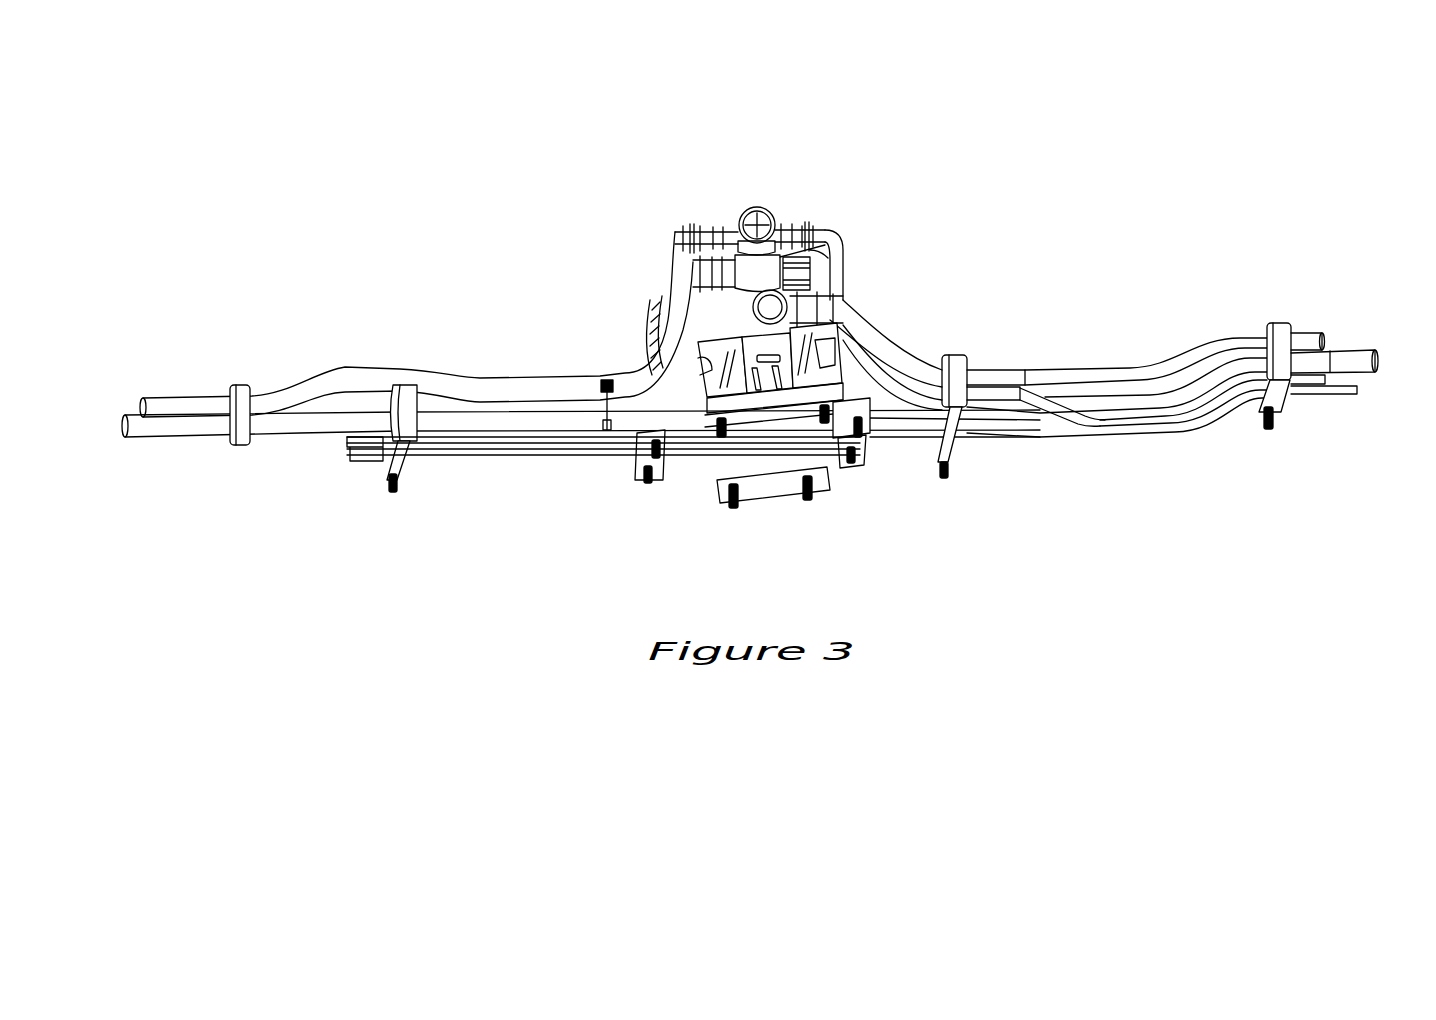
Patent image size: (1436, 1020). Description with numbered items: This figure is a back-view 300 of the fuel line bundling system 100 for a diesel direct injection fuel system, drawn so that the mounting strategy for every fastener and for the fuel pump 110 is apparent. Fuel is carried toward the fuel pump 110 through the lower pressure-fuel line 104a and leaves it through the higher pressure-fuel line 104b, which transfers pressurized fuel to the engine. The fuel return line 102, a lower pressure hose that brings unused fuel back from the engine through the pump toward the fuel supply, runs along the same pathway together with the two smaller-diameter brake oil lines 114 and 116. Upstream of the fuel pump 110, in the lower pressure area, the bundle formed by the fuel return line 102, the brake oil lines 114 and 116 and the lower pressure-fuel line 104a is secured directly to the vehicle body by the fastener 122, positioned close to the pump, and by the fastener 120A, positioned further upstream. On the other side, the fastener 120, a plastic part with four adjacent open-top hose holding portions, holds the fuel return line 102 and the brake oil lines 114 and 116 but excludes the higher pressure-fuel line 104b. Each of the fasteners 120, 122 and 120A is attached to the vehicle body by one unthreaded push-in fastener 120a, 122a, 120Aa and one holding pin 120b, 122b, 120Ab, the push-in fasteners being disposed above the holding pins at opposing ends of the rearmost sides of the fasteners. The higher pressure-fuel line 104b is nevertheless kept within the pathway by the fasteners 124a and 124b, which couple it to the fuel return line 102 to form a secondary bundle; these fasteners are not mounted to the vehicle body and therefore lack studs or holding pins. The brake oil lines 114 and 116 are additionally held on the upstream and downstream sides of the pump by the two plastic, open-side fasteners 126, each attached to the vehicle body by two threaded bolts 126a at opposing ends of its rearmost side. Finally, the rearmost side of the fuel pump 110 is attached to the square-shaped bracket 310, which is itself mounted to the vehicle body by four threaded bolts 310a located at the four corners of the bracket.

The back-view 300 is at (246, 163).
The fuel line bundling system 100 is at (384, 262).
The fuel return line 102 is at (1352, 352).
The lower pressure-fuel line 104a is at (1310, 333).
The higher pressure-fuel line 104b is at (155, 405).
The fuel pump 110 is at (733, 208).
The brake oil line 114 is at (1298, 385).
The brake oil line 116 is at (1338, 395).
The fastener 120 is at (412, 385).
The push-in fastener 120a is at (410, 459).
The holding pin 120b is at (395, 487).
The fastener 120A is at (1286, 323).
The push-in fastener 120Aa is at (1262, 408).
The holding pin 120Ab is at (1278, 425).
The fastener 122 is at (948, 352).
The push-in fastener 122a is at (970, 428).
The holding pin 122b is at (945, 468).
The fastener 124a is at (237, 382).
The fastener 124b is at (607, 380).
The fastener 126 is at (627, 466).
The threaded bolt 126a is at (655, 450).
The square-shaped bracket 310 is at (855, 345).
The threaded bolt 310a is at (790, 437).